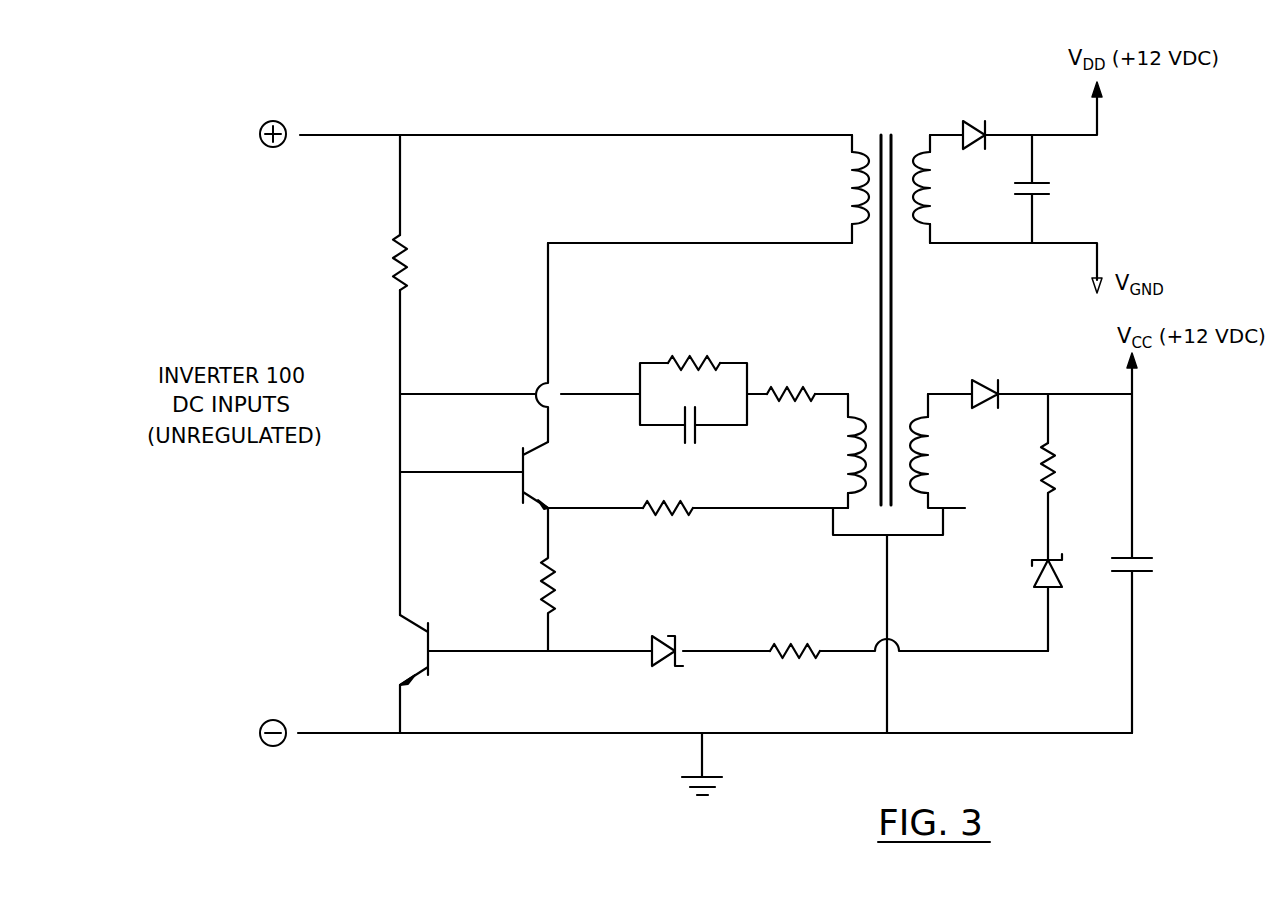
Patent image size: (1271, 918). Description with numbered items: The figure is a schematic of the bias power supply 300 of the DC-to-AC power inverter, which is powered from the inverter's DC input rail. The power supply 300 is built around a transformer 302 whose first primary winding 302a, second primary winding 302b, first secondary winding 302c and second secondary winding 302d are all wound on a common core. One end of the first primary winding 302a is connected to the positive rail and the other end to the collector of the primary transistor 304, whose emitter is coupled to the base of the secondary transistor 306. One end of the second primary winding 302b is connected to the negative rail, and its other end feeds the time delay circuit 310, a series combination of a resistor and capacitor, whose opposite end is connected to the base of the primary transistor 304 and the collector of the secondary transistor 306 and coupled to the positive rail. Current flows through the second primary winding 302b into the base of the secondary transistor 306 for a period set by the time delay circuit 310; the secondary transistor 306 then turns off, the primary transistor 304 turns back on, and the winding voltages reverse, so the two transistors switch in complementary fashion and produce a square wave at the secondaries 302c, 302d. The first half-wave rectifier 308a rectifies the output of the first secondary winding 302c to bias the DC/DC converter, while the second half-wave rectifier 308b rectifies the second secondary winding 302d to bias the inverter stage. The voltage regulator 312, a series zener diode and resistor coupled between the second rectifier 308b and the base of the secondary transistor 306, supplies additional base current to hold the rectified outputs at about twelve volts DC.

The bias power supply 300 is at (472, 797).
The transformer 302 is at (878, 387).
The first primary winding 302a is at (855, 172).
The second primary winding 302b is at (845, 437).
The first secondary winding 302c is at (930, 190).
The second secondary winding 302d is at (932, 455).
The primary transistor 304 is at (540, 450).
The secondary transistor 306 is at (418, 628).
The first half-wave rectifier 308a is at (1031, 187).
The second half-wave rectifier 308b is at (1143, 556).
The time delay circuit 310 is at (772, 328).
The voltage regulator 312 is at (970, 624).